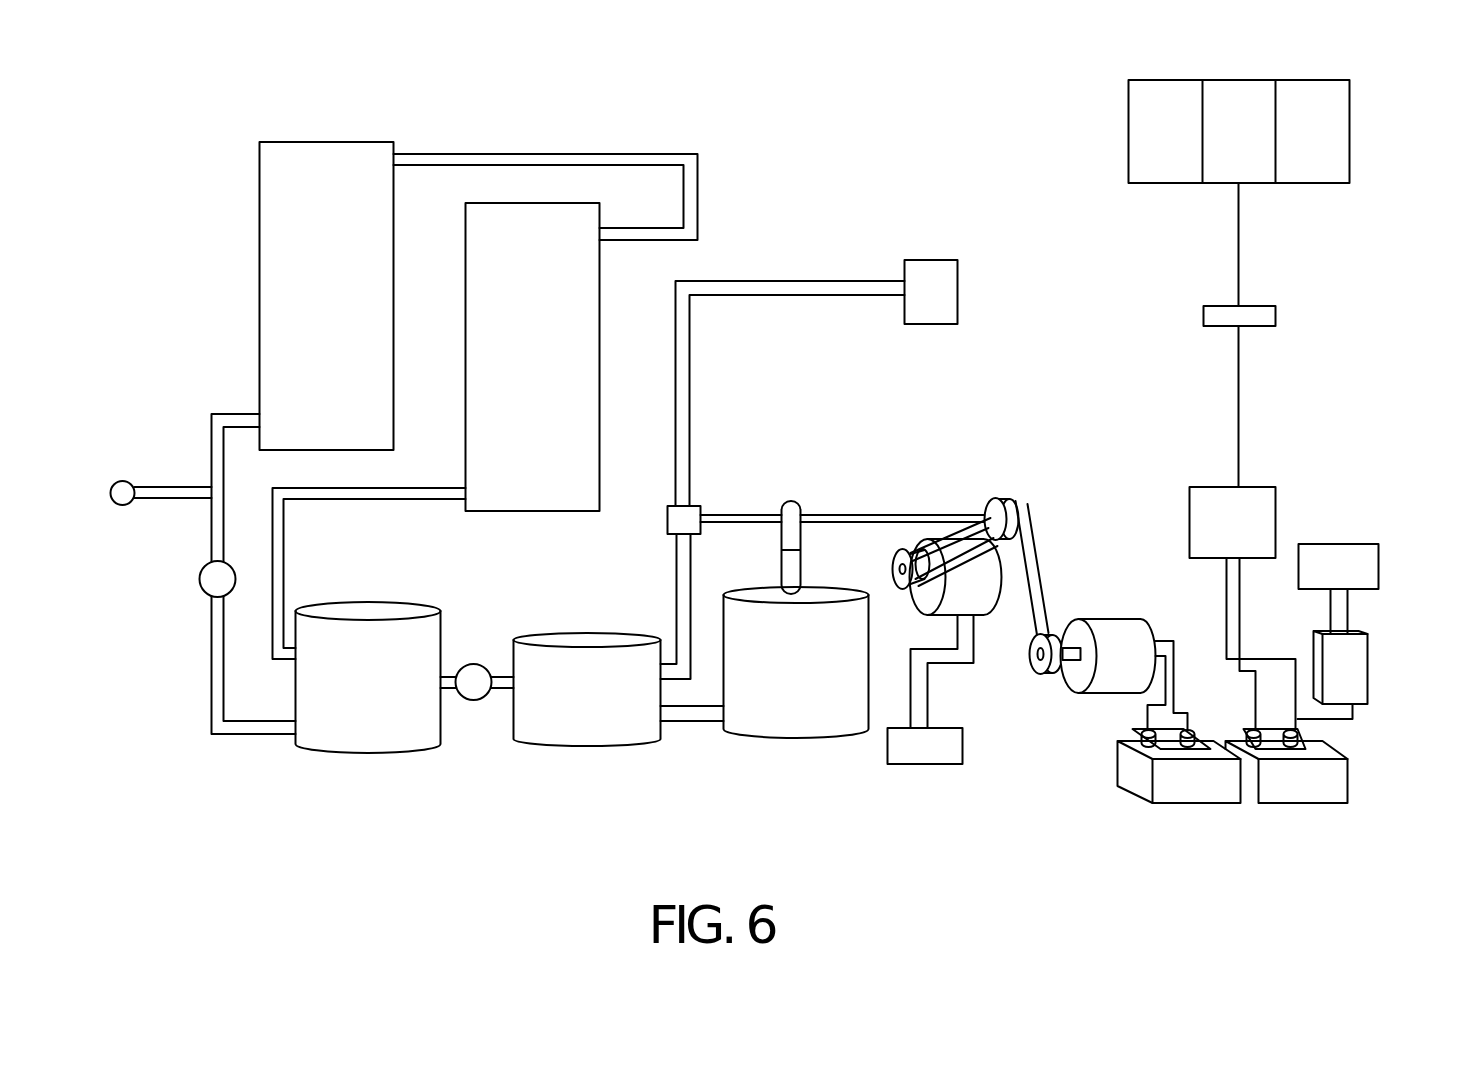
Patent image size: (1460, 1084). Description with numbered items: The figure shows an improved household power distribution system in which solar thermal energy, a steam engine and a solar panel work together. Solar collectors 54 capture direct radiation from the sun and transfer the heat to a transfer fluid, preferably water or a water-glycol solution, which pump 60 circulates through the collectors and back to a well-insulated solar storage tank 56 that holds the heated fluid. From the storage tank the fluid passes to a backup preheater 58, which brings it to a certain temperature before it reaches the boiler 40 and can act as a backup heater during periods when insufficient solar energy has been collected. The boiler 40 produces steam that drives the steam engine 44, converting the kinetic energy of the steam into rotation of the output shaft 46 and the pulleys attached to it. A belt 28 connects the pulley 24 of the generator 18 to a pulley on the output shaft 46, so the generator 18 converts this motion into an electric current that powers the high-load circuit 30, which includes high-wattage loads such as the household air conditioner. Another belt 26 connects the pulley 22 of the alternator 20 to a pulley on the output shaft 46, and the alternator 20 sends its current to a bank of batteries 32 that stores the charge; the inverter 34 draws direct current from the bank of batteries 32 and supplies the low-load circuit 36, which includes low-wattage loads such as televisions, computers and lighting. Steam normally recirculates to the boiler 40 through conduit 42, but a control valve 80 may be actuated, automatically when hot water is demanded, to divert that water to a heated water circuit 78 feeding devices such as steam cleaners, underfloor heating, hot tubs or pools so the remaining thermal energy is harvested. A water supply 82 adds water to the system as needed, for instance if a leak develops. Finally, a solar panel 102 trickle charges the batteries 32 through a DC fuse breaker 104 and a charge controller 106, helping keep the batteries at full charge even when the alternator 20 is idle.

The generator 18 is at (977, 590).
The alternator 20 is at (1103, 620).
The pulley 22 is at (1043, 675).
The pulley 24 is at (893, 562).
The belt 26 is at (1038, 582).
The belt 28 is at (937, 537).
The high-load circuit 30 is at (893, 758).
The bank of batteries 32 is at (1292, 783).
The inverter 34 is at (1357, 656).
The low-load circuit 36 is at (1357, 560).
The boiler 40 is at (768, 726).
The conduit 42 is at (737, 513).
The steam engine 44 is at (791, 503).
The output shaft 46 is at (852, 517).
The solar collectors 54 is at (463, 320).
The solar storage tank 56 is at (368, 742).
The backup preheater 58 is at (585, 638).
The pump 60 is at (202, 572).
The heated water circuit 78 is at (933, 290).
The control valve 80 is at (667, 512).
The water supply 82 is at (125, 485).
The solar panel 102 is at (1313, 183).
The DC fuse breaker 104 is at (1275, 313).
The charge controller 106 is at (1275, 483).